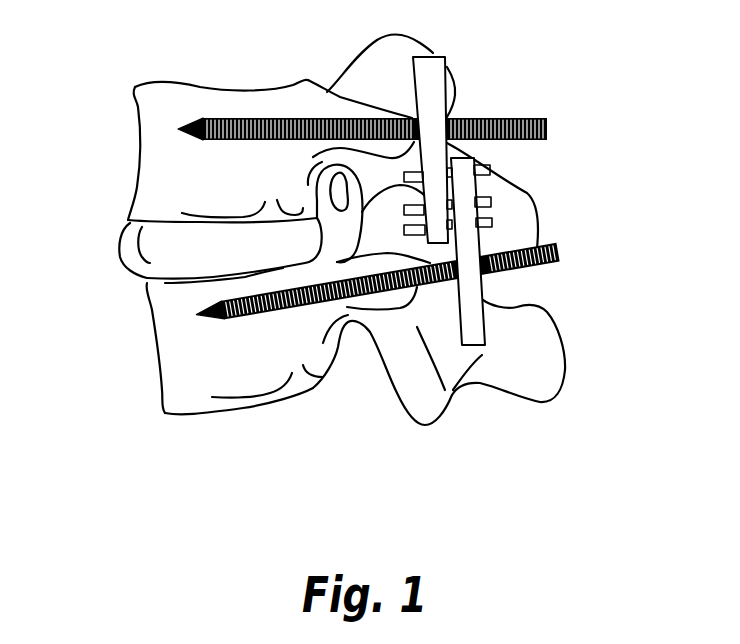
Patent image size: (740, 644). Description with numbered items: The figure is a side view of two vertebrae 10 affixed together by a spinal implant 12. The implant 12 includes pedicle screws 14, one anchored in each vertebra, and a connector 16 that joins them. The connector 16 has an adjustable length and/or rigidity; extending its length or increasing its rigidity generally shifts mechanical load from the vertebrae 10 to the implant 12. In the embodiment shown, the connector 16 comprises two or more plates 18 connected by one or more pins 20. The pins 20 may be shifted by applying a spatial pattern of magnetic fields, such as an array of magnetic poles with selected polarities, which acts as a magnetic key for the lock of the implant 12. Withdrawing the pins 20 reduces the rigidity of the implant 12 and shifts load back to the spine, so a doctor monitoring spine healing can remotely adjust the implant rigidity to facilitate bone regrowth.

The vertebrae 10 is at (155, 165).
The spinal implant 12 is at (411, 183).
The pedicle screws 14 is at (525, 120).
The connector 16 is at (489, 168).
The plates 18 is at (427, 72).
The pins 20 is at (487, 205).